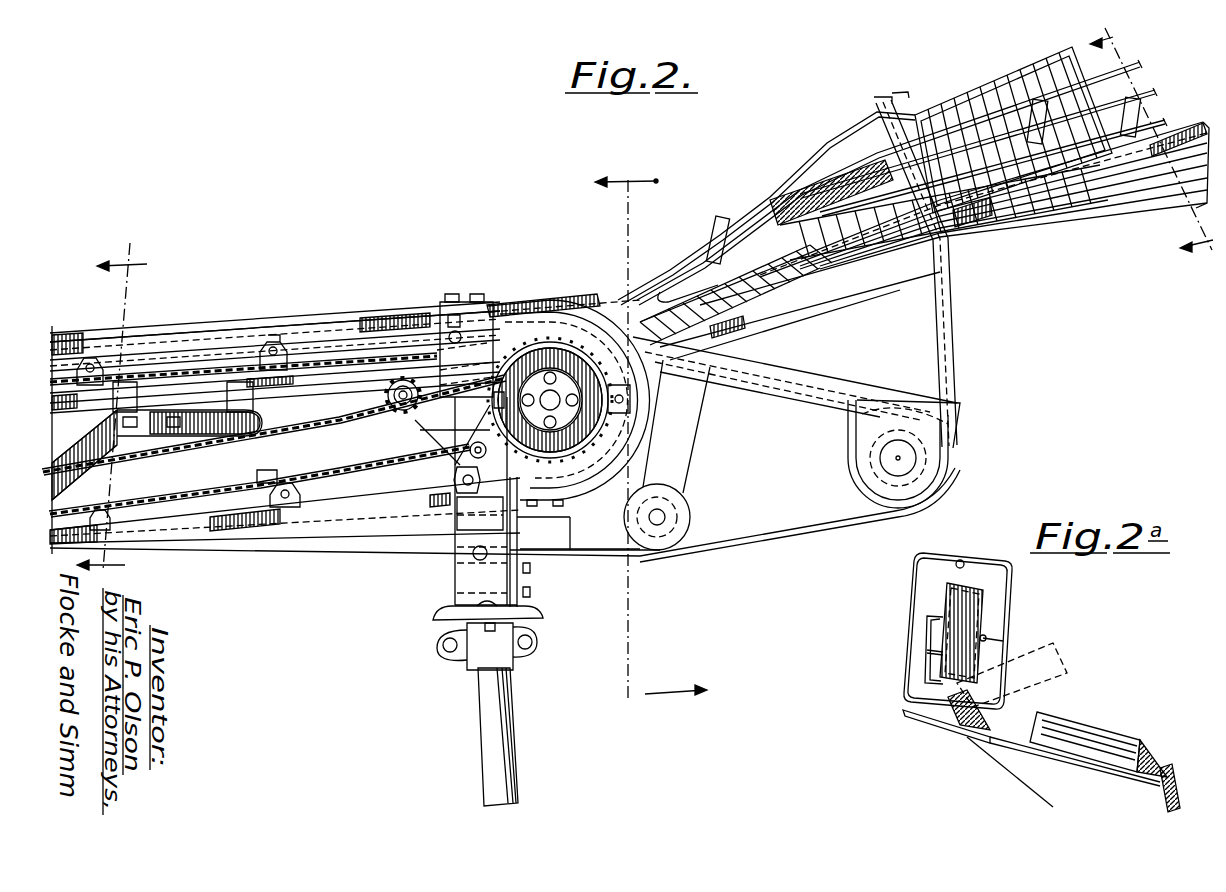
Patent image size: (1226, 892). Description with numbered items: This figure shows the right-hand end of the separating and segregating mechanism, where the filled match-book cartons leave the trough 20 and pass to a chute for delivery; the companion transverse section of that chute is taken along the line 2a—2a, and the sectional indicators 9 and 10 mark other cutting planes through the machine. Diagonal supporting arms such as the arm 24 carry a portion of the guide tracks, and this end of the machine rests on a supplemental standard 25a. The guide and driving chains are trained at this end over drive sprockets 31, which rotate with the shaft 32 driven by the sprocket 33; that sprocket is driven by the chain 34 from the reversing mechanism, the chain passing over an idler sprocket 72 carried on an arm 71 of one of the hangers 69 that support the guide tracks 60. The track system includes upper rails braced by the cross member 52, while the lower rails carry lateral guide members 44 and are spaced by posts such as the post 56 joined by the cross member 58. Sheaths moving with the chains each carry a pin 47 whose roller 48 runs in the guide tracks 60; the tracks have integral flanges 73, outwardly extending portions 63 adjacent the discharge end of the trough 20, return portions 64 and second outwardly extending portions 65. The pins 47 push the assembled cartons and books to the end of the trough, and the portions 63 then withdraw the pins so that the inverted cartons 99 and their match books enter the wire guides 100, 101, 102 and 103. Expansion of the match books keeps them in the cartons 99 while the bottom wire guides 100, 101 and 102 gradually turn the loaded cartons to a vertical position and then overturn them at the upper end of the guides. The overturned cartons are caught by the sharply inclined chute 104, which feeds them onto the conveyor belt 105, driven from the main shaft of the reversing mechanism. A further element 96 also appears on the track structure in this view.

In FIG. 2, the section line 9- 9 is at (651, 436).
In FIG. 2, the section line 10- 10 is at (112, 412).
In FIG. 2, the section line 2a— 2a is at (1151, 152).
In FIG. 2, the trough 20 is at (306, 377).
In FIG. 2, the diagonal supporting arm 24 is at (83, 444).
In FIG. 2, the supplemental standard 25a is at (482, 770).
In FIG. 2, the drive sprockets 31 is at (505, 305).
In FIG. 2, the shaft 32 is at (608, 390).
In FIG. 2, the sprocket 33 is at (598, 441).
In FIG. 2, the chain 34 is at (360, 447).
In FIG. 2, the lateral guide members 44 is at (157, 493).
In FIG. 2, the pin 47 is at (274, 342).
In FIG. 2, the roller 48 is at (88, 356).
In FIG. 2, the cross member 52 is at (140, 408).
In FIG. 2, the post 56 is at (428, 443).
In FIG. 2, the cross member 58 is at (433, 313).
In FIG. 2, the guide tracks 60 is at (157, 333).
In FIG. 2, the outwardly extending portions 63 is at (530, 310).
In FIG. 2, the return portions 64 is at (368, 507).
In FIG. 2, the second outwardly extending portions 65 is at (220, 517).
In FIG. 2, the hangers 69 is at (457, 293).
In FIG. 2, the arm 71 is at (470, 456).
In FIG. 2, the idler sprocket 72 is at (386, 400).
In FIG. 2, the flanges 73 is at (365, 328).
In FIG. 2, the guide rail 96 is at (237, 357).
In FIG. 2, the carton 99 is at (703, 263).
In FIG. 2A, the carton 99 is at (1052, 643).
In FIG. 2, the wire guide 100 is at (1167, 120).
In FIG. 2A, the wire guide 100 is at (925, 712).
In FIG. 2, the wire guide 101 is at (1157, 92).
In FIG. 2A, the wire guide 101 is at (930, 660).
In FIG. 2, the wire guide 102 is at (1142, 63).
In FIG. 2A, the wire guide 102 is at (940, 617).
In FIG. 2, the wire guide 103 is at (905, 95).
In FIG. 2A, the wire guide 103 is at (962, 560).
In FIG. 2, the chute 104 is at (1130, 220).
In FIG. 2A, the chute 104 is at (1023, 780).
In FIG. 2, the conveyor belt 105 is at (367, 550).